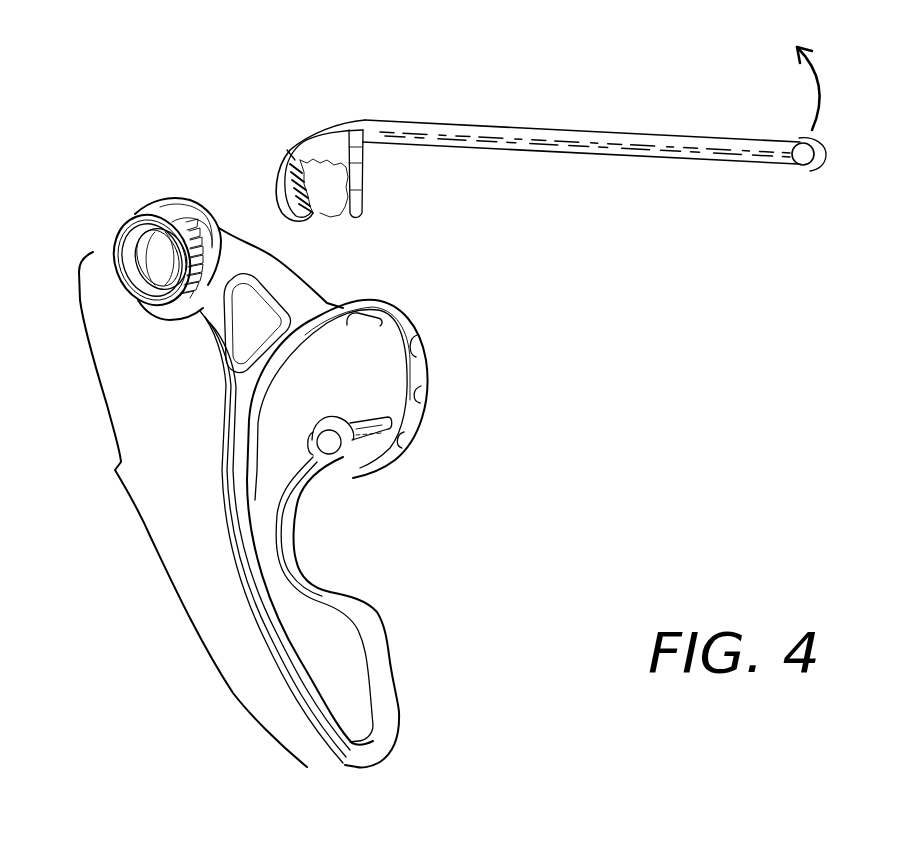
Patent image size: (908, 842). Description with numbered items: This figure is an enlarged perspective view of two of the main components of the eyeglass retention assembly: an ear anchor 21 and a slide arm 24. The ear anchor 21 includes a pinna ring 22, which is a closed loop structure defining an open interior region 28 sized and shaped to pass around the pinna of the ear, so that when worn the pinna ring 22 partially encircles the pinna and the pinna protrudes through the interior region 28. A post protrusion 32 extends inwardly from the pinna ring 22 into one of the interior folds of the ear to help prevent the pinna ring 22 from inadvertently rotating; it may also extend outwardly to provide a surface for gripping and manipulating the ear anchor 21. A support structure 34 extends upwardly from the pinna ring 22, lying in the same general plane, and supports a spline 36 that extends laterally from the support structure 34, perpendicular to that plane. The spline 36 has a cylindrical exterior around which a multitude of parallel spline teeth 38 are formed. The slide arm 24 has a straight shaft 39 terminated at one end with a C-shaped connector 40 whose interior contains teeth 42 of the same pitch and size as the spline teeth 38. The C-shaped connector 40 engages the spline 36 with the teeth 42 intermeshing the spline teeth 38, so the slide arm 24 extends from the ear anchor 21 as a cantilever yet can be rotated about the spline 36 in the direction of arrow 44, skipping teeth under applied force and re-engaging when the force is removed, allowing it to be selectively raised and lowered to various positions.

The ear anchor 21 is at (117, 470).
The pinna ring 22 is at (397, 313).
The slide arm 24 is at (607, 157).
The interior region 28 is at (363, 387).
The post protrusion 32 is at (320, 458).
The support structure 34 is at (207, 297).
The spline 36 is at (224, 228).
The spline teeth 38 is at (190, 207).
The straight shaft 39 is at (690, 147).
The C-shaped connector 40 is at (333, 151).
The teeth 42 is at (309, 187).
The arrow 44 is at (818, 97).